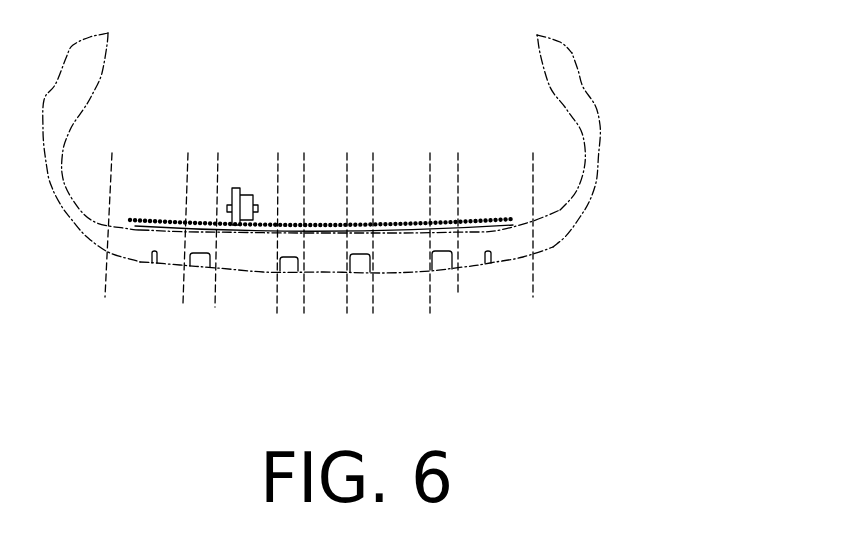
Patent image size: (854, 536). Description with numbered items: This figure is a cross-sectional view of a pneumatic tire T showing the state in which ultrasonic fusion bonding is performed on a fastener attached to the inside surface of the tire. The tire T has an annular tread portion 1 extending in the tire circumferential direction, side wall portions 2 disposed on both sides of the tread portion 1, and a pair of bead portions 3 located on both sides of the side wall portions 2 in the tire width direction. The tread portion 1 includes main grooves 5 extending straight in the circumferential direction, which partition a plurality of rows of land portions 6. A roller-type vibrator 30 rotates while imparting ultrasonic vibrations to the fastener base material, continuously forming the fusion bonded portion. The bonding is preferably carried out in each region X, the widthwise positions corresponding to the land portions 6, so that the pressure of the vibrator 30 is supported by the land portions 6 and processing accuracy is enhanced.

The tread portion 1 is at (553, 250).
The side wall portion 2 is at (588, 208).
The bead portion 3 is at (572, 52).
The main groove 5 is at (210, 263).
The land portion 6 is at (132, 263).
The roller-type vibrator 30 is at (238, 188).
The pneumatic tire T is at (583, 89).
The region X is at (112, 153).